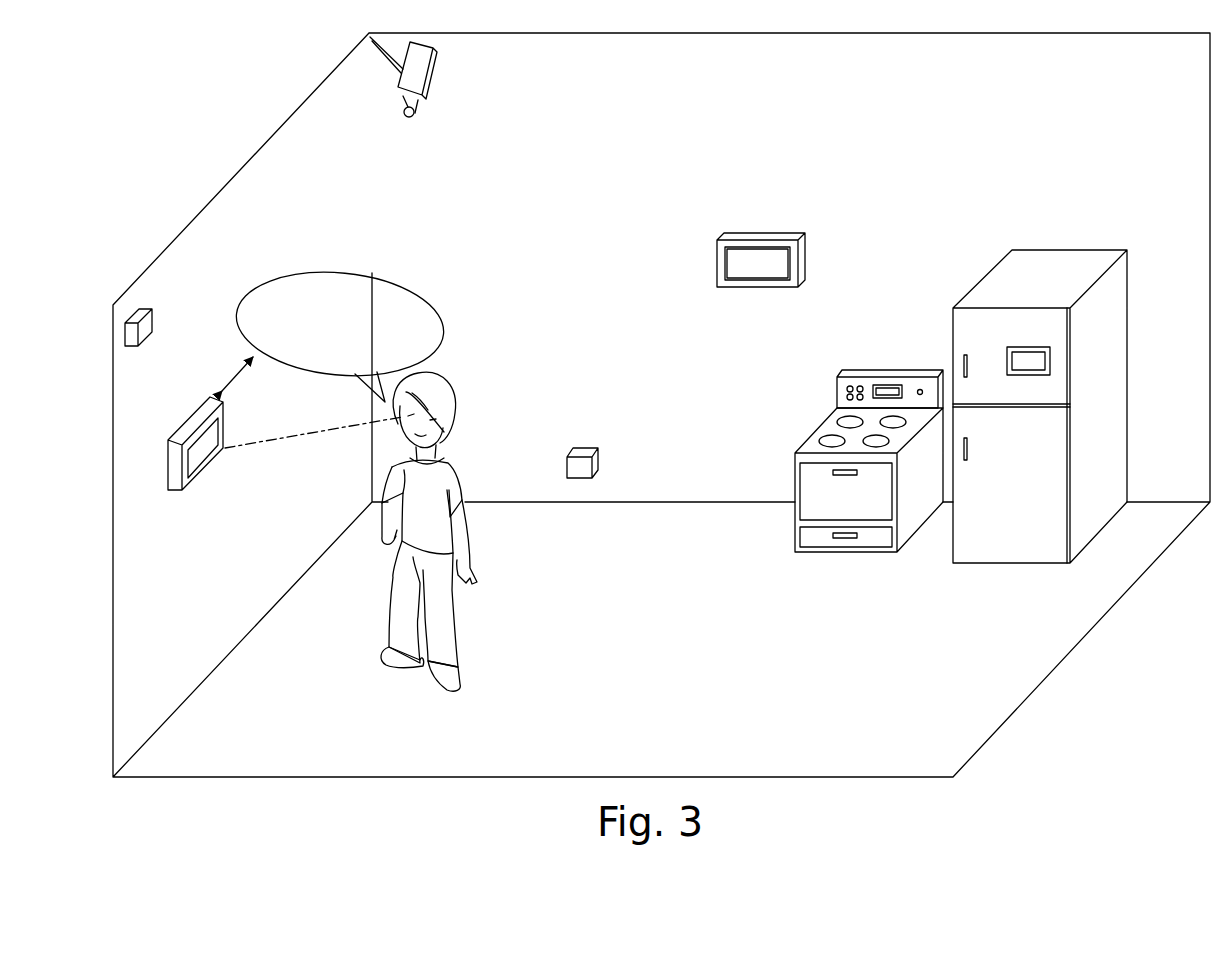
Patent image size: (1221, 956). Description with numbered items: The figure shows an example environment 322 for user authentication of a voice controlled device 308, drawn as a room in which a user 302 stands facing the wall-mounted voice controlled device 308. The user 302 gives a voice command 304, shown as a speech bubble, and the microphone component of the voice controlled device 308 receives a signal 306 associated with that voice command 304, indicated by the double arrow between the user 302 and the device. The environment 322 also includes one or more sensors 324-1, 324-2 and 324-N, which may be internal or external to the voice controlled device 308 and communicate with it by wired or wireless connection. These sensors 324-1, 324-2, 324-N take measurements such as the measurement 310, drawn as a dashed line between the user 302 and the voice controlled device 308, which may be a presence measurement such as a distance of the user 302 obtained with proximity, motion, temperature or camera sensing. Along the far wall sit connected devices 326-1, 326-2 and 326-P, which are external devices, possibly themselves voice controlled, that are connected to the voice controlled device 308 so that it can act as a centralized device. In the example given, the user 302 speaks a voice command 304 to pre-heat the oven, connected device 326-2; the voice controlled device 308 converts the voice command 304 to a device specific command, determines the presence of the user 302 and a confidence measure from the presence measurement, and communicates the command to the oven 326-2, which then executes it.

The user 302 is at (447, 395).
The voice command 304 is at (318, 272).
The signal 306 is at (226, 374).
The voice controlled device 308 is at (184, 424).
The measurement 310 is at (297, 433).
The environment 322 is at (199, 138).
The sensor 324-1 is at (153, 315).
The sensor 324-2 is at (432, 90).
The sensor 324-N is at (580, 448).
The connected device 326-1 is at (784, 230).
The connected device 326-2 is at (904, 368).
The connected device 326-P is at (1053, 248).